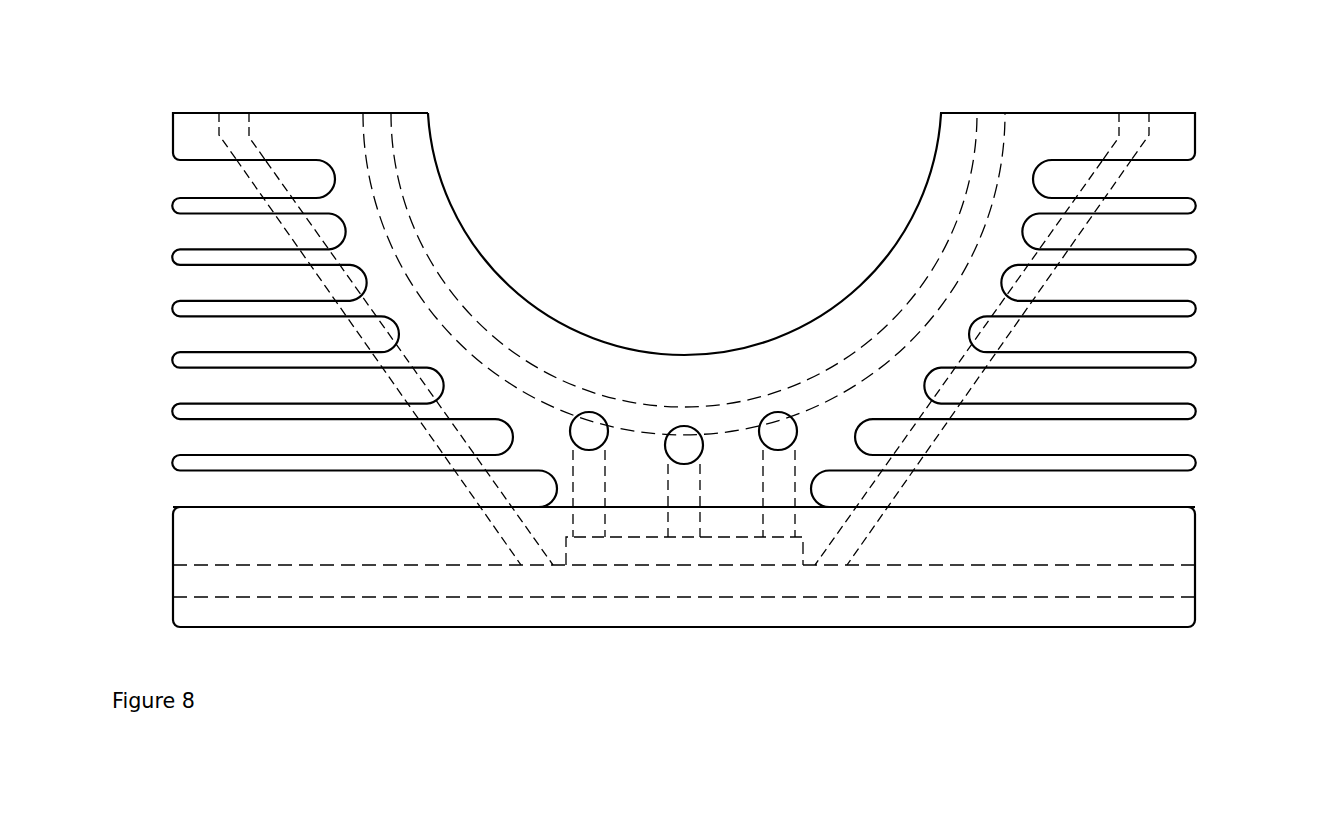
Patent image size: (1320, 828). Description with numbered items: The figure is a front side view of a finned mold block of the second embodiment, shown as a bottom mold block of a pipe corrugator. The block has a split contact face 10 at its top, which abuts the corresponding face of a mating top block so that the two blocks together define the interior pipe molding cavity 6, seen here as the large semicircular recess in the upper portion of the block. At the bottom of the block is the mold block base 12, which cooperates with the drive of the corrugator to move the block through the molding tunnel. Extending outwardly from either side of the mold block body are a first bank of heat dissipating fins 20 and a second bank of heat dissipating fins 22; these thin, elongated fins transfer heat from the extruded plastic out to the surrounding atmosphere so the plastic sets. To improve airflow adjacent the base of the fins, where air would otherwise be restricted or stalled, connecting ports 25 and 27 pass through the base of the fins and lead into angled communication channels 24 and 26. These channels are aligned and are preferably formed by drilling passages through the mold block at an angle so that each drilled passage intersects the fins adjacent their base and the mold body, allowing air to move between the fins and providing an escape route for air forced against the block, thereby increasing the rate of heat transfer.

The pipe molding cavity 6 is at (806, 150).
The split contact face 10 is at (386, 112).
The mold block base 12 is at (1008, 608).
The first bank of heat dissipating fins 20 is at (150, 343).
The second bank of heat dissipating fins 22 is at (1227, 358).
The communication channel 24 is at (540, 567).
The connecting port 25 is at (238, 120).
The communication channel 26 is at (835, 567).
The connecting port 27 is at (1132, 122).